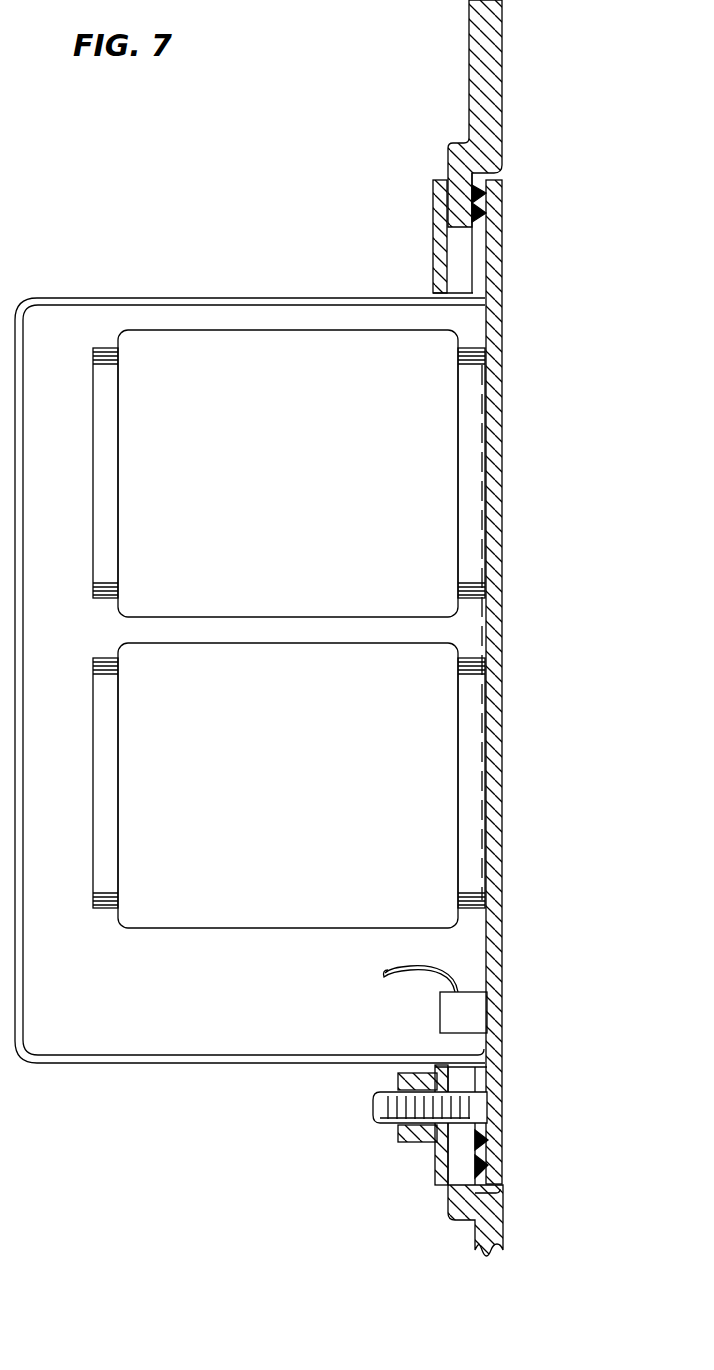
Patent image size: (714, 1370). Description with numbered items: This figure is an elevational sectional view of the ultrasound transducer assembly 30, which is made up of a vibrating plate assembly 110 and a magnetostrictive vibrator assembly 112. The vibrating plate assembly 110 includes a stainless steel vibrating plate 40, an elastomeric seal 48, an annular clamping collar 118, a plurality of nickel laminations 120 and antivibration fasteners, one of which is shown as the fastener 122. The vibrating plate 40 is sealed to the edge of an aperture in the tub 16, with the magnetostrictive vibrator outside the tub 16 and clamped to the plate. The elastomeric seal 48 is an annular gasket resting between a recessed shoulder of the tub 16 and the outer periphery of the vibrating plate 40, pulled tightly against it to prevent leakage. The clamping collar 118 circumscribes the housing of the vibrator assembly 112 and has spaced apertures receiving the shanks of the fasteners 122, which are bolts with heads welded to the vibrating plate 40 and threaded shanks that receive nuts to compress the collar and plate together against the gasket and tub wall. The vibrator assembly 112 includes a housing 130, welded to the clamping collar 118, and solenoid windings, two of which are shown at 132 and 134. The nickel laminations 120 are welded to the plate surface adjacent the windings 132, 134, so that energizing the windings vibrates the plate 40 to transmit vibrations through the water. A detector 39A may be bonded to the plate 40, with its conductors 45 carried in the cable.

The tub 16 is at (502, 64).
The ultrasound transducer assembly 30 is at (91, 223).
The vibrating plate 40 is at (497, 538).
The conductors 45 is at (423, 972).
The elastomeric seal 48 is at (502, 208).
The detector 39A is at (450, 1010).
The vibrating plate assembly 110 is at (540, 480).
The magnetostrictive vibrator assembly 112 is at (216, 281).
The clamping collar 118 is at (433, 253).
The nickel laminations 120 is at (472, 512).
The antivibration fastener 122 is at (353, 1119).
The housing 130 is at (320, 302).
The solenoid winding 132 is at (285, 603).
The solenoid winding 134 is at (290, 918).